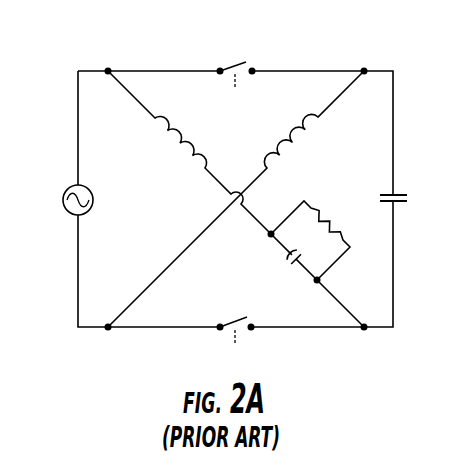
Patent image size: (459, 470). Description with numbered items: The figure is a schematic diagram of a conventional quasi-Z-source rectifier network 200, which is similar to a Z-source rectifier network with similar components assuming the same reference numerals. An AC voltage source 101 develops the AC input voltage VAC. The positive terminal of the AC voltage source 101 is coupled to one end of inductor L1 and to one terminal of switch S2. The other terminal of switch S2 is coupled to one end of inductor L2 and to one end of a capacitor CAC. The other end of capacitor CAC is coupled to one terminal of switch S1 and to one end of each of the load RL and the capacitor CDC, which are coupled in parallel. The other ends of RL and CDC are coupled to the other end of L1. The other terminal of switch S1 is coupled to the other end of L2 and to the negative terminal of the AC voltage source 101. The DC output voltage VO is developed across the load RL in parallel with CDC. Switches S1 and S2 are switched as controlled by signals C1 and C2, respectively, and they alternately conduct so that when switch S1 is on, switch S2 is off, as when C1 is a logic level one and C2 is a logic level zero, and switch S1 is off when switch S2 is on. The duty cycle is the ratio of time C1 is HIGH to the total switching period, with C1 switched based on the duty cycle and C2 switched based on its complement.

The quasi-Z-source rectifier network 200 is at (347, 41).
The AC voltage source 101 is at (86, 186).
The AC input voltage VAC is at (29, 178).
The switch S1 is at (236, 307).
The switch S2 is at (236, 55).
The control signal C1 is at (233, 349).
The control signal C2 is at (240, 95).
The inductor L1 is at (189, 152).
The inductor L2 is at (236, 199).
The load RL is at (312, 236).
The capacitor CDC is at (311, 250).
The output voltage VO is at (306, 279).
The capacitor CAC is at (411, 200).